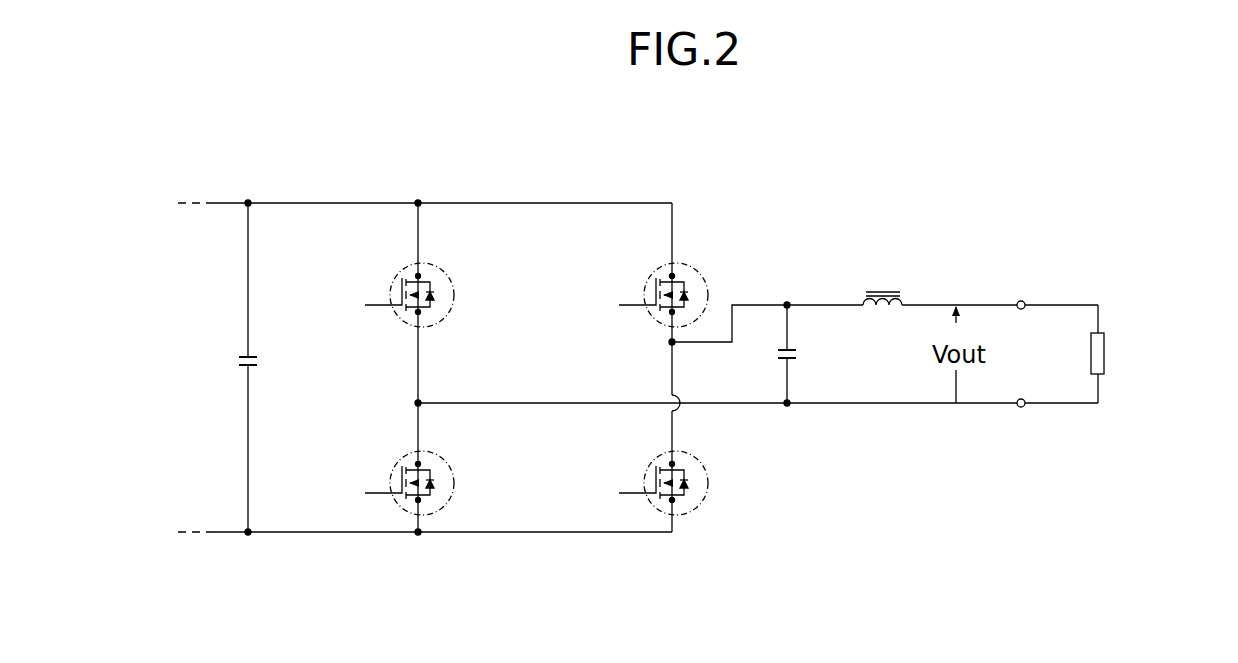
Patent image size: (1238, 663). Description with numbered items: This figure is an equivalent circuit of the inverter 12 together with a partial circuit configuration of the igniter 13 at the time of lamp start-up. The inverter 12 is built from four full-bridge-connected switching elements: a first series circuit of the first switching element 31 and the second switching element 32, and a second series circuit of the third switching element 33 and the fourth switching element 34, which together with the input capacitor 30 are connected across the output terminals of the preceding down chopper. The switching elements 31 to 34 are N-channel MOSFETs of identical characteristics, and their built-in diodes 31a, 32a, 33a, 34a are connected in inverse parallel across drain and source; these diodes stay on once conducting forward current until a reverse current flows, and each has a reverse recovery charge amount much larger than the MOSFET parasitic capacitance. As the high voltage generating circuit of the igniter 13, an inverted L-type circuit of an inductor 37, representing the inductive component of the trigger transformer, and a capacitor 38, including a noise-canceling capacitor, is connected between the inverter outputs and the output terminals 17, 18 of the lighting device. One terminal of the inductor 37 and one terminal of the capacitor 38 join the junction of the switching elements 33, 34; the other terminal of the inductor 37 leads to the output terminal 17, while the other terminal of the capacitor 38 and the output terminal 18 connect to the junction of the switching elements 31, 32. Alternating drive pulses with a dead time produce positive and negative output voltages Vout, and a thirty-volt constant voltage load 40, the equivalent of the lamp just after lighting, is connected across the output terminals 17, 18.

The inverter 12 is at (518, 190).
The igniter 13 is at (877, 214).
The input capacitor 30 is at (258, 362).
The first switching element 31 is at (410, 270).
The diode 31a is at (432, 297).
The second switching element 32 is at (410, 460).
The diode 32a is at (432, 487).
The third switching element 33 is at (662, 270).
The diode 33a is at (686, 297).
The fourth switching element 34 is at (662, 460).
The diode 34a is at (686, 487).
The inductor 37 is at (886, 291).
The capacitor 38 is at (798, 352).
The output terminal 17 is at (1023, 300).
The output terminal 18 is at (1022, 407).
The constant voltage load 40 is at (1106, 353).